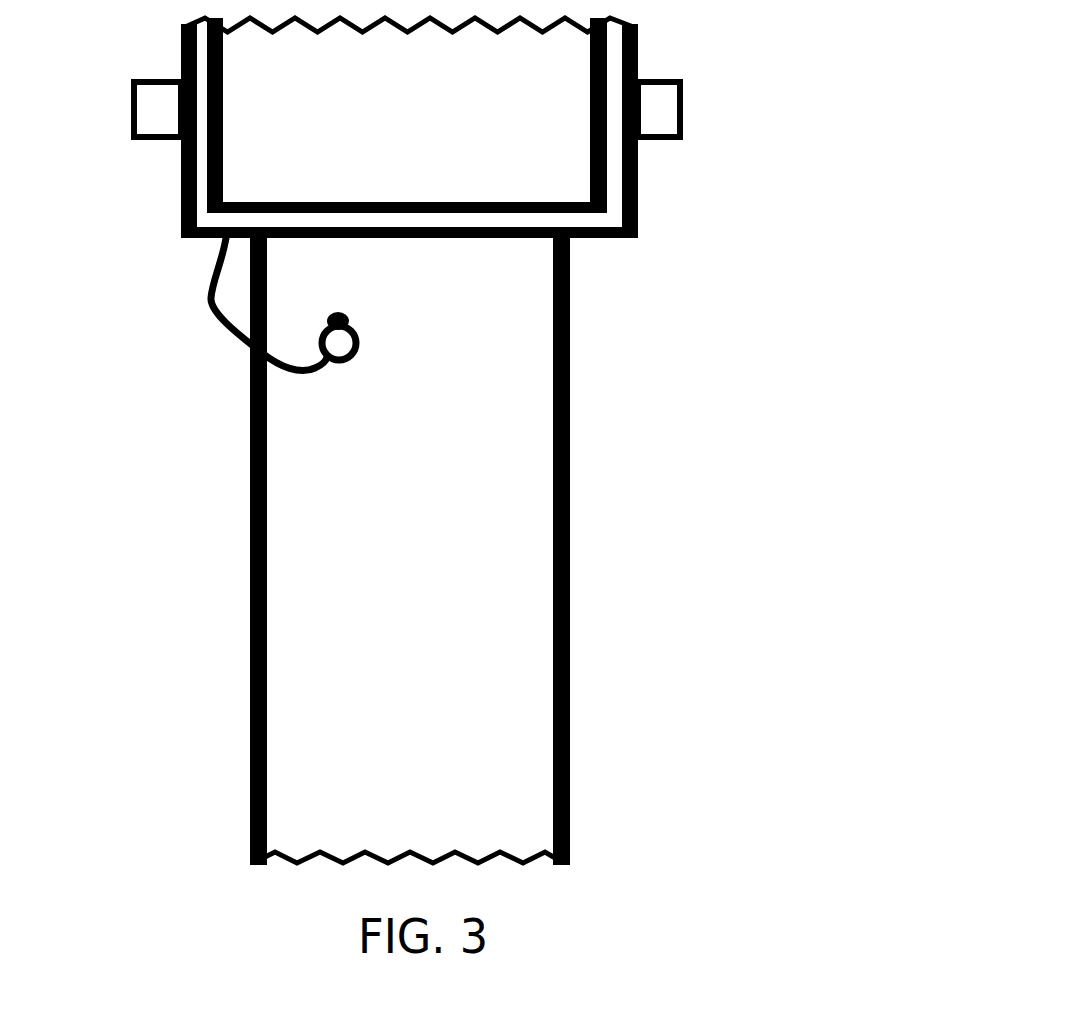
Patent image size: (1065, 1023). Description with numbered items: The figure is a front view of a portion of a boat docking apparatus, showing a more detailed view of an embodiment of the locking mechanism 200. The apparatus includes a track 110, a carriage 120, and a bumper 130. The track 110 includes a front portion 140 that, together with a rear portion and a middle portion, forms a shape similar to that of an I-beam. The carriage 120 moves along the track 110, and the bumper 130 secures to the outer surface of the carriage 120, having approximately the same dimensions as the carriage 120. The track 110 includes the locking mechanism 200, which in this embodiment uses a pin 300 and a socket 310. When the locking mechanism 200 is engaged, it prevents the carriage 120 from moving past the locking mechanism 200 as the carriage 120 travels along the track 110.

The track 110 is at (212, 802).
The carriage 120 is at (637, 235).
The bumper 130 is at (310, 78).
The front portion 140 is at (478, 738).
The locking mechanism 200 is at (285, 460).
The pin 300 is at (362, 350).
The socket 310 is at (330, 327).